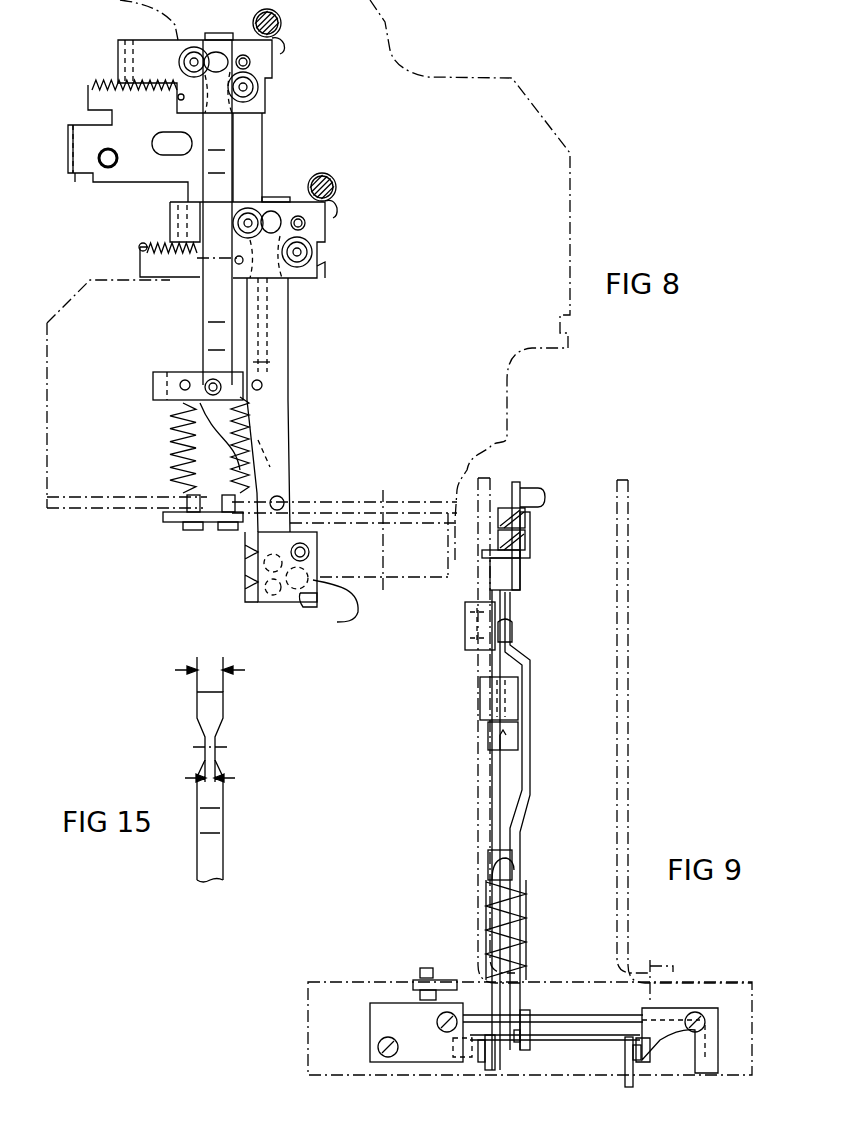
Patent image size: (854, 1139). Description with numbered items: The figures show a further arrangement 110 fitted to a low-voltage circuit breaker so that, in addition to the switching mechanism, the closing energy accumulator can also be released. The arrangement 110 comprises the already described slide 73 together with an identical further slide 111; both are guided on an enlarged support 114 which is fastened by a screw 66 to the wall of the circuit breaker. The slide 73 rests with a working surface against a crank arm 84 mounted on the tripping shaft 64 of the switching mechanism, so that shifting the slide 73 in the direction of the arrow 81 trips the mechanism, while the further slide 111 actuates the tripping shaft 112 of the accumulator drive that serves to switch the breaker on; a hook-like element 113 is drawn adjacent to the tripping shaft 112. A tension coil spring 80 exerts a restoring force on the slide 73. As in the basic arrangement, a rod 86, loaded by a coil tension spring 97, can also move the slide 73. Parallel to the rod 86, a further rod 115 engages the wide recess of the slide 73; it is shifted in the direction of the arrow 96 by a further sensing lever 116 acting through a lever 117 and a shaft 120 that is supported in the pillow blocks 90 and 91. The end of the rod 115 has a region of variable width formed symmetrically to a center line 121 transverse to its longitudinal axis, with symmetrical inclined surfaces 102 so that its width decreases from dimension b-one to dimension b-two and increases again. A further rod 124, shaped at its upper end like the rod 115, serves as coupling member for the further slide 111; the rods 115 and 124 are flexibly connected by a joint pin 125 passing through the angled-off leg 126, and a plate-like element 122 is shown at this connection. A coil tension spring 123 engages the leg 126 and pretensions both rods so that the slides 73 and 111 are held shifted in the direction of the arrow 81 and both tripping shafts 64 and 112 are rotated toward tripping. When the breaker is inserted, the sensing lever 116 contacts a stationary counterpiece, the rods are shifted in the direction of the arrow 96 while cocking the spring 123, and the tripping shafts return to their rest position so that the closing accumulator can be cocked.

In FIG. 8, the tripping shaft 64 is at (333, 178).
In FIG. 8, the mounting screw 66 is at (117, 158).
In FIG. 8, the slide 73 is at (310, 272).
In FIG. 8, the tension coil spring 80 is at (133, 100).
In FIG. 8, the arrow 81 is at (86, 56).
In FIG. 8, the crank arm 84 is at (337, 205).
In FIG. 9, the rod 86 is at (561, 846).
In FIG. 9, the pillow block 90 is at (375, 1021).
In FIG. 9, the pillow block 91 is at (690, 1052).
In FIG. 8, the arrow 96 is at (310, 326).
In FIG. 9, the arrow 96 is at (550, 880).
In FIG. 8, the coil tension spring 97 is at (230, 487).
In FIG. 15, the inclined surfaces 102 is at (203, 762).
In FIG. 8, the arrangement 110 is at (372, 250).
In FIG. 9, the arrangement 110 is at (570, 716).
In FIG. 8, the further slide 111 is at (308, 131).
In FIG. 8, the tripping shaft 112 is at (279, 13).
In FIG. 9, the tripping shaft 112 is at (546, 497).
In FIG. 8, the hook 113 is at (284, 40).
In FIG. 9, the hook 113 is at (516, 478).
In FIG. 8, the support 114 is at (308, 169).
In FIG. 8, the further rod 115 is at (335, 394).
In FIG. 9, the further rod 115 is at (491, 790).
In FIG. 15, the further rod 115 is at (274, 871).
In FIG. 8, the further sensing lever 116 is at (337, 622).
In FIG. 9, the further sensing lever 116 is at (627, 1070).
In FIG. 9, the lever 117 is at (480, 1062).
In FIG. 9, the shaft 120 is at (567, 1068).
In FIG. 15, the center line 121 is at (230, 747).
In FIG. 8, the plate 122 is at (153, 388).
In FIG. 8, the coil tension spring 123 is at (176, 448).
In FIG. 8, the further rod 124 is at (201, 312).
In FIG. 9, the further rod 124 is at (574, 795).
In FIG. 15, the further rod 124 is at (318, 871).
In FIG. 8, the joint pin 125 is at (210, 383).
In FIG. 9, the angled-off leg 126 is at (512, 1058).